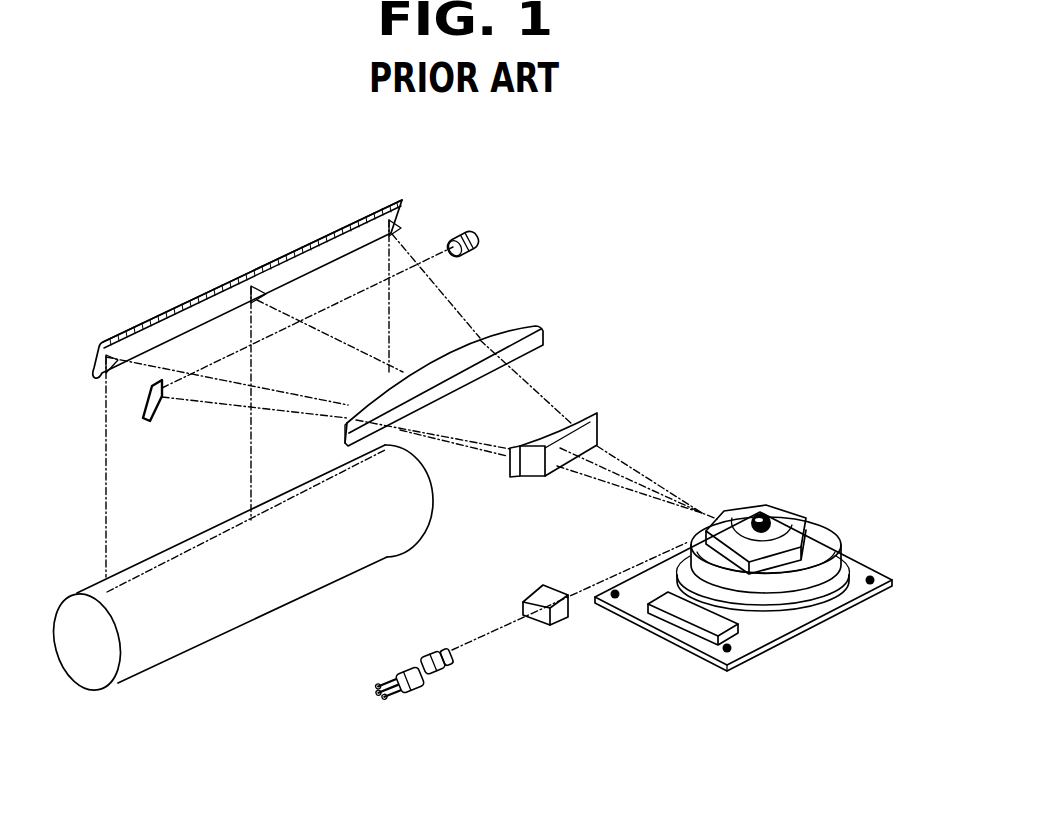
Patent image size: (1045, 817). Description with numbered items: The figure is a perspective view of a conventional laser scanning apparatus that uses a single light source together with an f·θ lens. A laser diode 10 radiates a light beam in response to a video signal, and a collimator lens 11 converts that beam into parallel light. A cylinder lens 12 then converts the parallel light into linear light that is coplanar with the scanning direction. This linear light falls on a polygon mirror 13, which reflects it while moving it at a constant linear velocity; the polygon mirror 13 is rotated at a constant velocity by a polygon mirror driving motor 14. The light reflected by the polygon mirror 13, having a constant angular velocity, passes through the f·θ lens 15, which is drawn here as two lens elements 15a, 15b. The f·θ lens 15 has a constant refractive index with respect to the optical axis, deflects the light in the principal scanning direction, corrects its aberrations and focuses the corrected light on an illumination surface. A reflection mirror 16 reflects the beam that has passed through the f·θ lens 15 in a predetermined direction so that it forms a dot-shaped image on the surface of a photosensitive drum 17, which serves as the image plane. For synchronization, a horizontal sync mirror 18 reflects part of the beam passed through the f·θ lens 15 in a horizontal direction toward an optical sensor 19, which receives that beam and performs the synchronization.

The laser diode 10 is at (406, 695).
The collimator lens 11 is at (443, 671).
The cylinder lens 12 is at (569, 623).
The polygon mirror 13 is at (772, 505).
The polygon mirror driving motor 14 is at (832, 531).
The f·θ lens 15 is at (596, 415).
The f·θ lens element 15a is at (598, 427).
The f·θ lens element 15b is at (517, 327).
The reflection mirror 16 is at (184, 300).
The photosensitive drum 17 is at (183, 638).
The horizontal sync mirror 18 is at (147, 421).
The optical sensor 19 is at (478, 232).